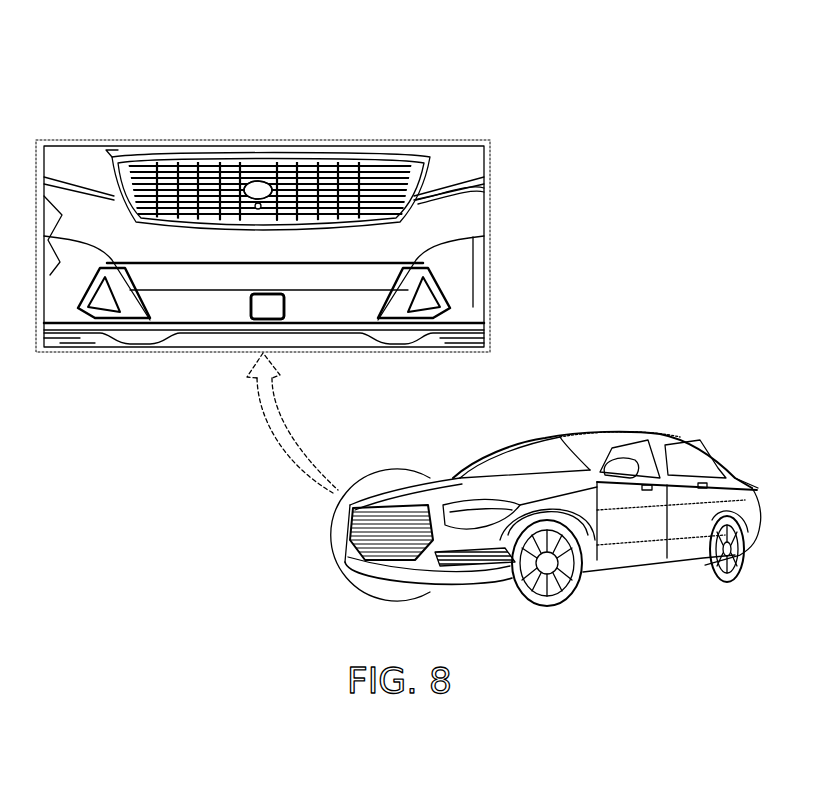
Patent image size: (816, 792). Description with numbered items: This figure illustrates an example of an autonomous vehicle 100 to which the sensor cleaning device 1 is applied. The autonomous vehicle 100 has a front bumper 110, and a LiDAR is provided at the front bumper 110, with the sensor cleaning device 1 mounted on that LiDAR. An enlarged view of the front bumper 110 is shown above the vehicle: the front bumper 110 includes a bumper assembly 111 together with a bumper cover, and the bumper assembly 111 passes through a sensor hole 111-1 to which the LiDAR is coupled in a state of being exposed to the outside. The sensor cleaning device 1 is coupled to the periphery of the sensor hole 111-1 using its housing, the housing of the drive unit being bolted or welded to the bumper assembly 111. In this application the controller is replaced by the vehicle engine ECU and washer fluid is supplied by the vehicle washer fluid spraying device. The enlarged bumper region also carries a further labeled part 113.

The sensor cleaning device 1 is at (252, 303).
The autonomous vehicle 100 is at (605, 432).
The front bumper 110 is at (468, 62).
The bumper assembly 111 is at (342, 277).
The sensor hole 111-1 is at (258, 293).
The headlamp 113 is at (448, 215).